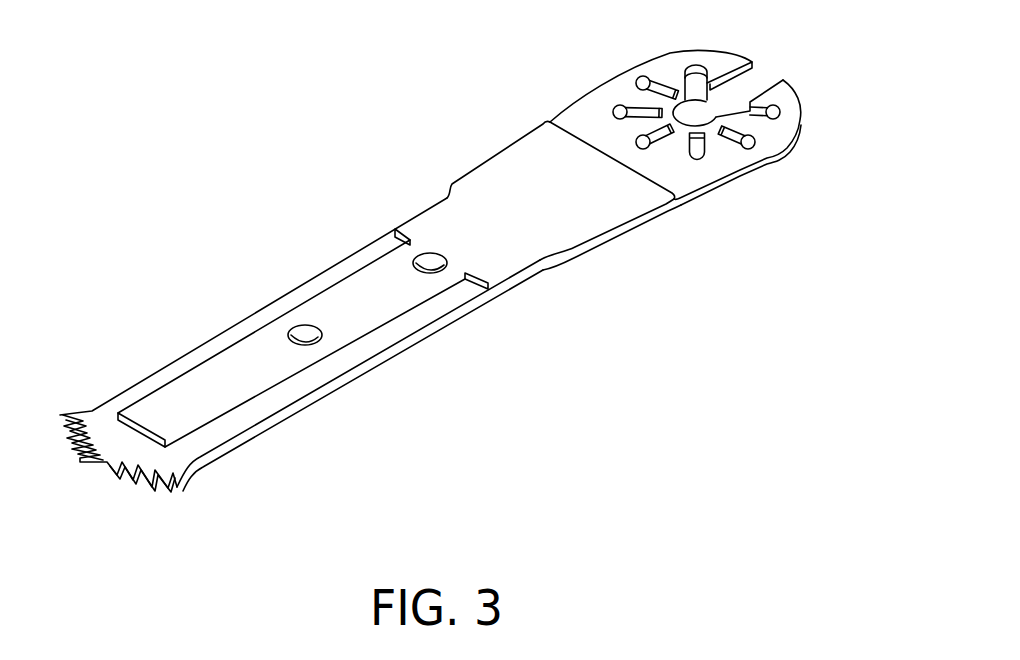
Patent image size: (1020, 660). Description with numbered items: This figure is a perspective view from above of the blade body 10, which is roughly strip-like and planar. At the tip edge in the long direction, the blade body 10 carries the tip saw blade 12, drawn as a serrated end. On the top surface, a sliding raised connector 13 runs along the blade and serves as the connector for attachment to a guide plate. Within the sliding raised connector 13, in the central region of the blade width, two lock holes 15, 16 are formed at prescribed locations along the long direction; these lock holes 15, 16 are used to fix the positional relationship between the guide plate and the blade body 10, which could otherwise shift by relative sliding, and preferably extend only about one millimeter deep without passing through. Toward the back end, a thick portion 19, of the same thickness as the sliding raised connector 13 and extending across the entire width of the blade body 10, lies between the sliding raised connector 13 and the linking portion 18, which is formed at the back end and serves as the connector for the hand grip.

The blade body 10 is at (340, 172).
The tip saw blade 12 is at (113, 478).
The sliding raised connector 13 is at (213, 383).
The lock hole 15 is at (300, 326).
The lock hole 16 is at (437, 258).
The linking portion 18 is at (773, 164).
The thick portion 19 is at (612, 240).